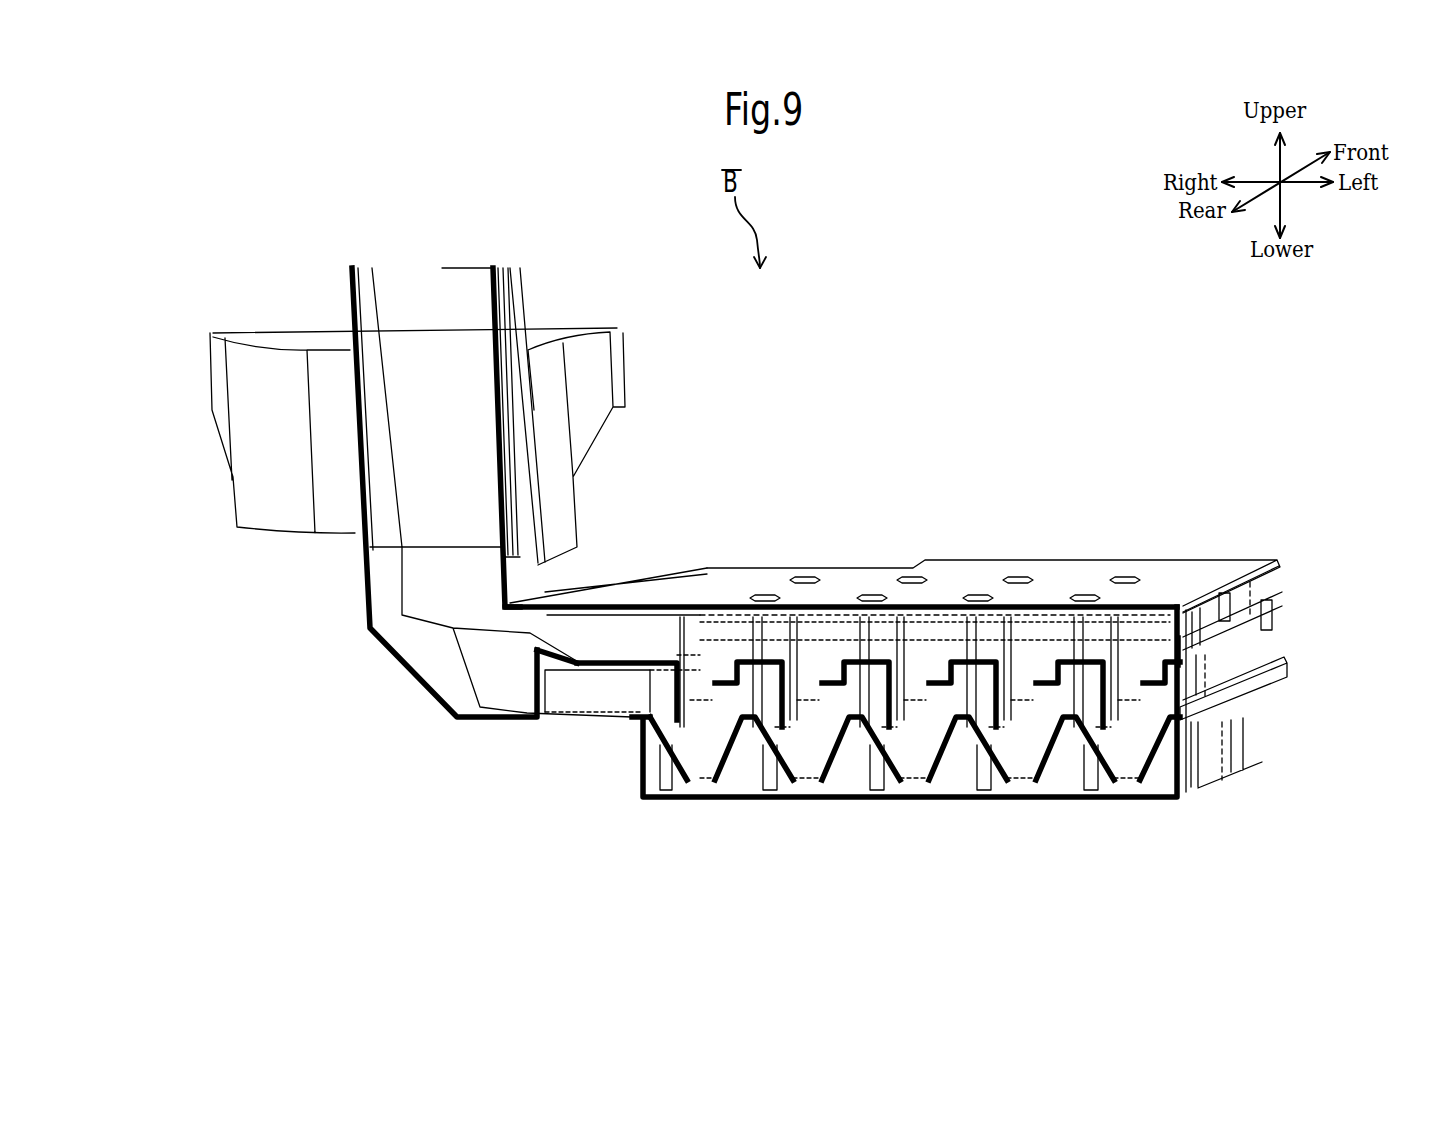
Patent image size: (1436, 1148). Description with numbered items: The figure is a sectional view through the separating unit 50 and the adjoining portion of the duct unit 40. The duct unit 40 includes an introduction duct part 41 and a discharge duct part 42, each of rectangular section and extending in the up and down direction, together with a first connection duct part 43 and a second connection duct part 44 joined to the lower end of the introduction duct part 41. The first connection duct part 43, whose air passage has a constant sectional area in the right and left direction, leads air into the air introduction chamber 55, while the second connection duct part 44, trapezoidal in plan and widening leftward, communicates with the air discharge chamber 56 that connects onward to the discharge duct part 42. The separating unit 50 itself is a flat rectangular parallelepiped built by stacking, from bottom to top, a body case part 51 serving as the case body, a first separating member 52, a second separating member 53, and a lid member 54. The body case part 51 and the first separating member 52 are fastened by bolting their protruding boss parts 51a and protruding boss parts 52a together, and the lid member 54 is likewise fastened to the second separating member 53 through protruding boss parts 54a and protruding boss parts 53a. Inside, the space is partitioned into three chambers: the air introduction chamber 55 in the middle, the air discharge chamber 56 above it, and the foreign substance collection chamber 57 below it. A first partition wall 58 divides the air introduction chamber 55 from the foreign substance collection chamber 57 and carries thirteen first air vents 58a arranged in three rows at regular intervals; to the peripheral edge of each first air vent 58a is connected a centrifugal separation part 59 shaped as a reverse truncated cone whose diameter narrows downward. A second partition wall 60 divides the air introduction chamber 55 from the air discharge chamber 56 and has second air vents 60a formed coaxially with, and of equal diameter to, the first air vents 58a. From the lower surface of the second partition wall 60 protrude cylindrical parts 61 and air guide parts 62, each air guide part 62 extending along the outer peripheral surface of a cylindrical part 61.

The duct unit 40 is at (567, 317).
The introduction duct part 41 is at (593, 390).
The discharge duct part 42 is at (507, 486).
The first connection duct part 43 is at (597, 720).
The second connection duct part 44 is at (600, 597).
The separating unit 50 is at (862, 562).
The body case part 51 is at (1203, 757).
The protruding boss parts 51a is at (903, 745).
The first separating member 52 is at (1217, 667).
The protruding boss parts 52a is at (868, 743).
The second separating member 53 is at (1258, 600).
The protruding boss parts 53a is at (1090, 650).
The lid member 54 is at (1190, 577).
The protruding boss parts 54a is at (1072, 597).
The air introduction chamber 55 is at (840, 668).
The air discharge chamber 56 is at (847, 625).
The foreign substance collection chamber 57 is at (790, 672).
The first partition wall 58 is at (1163, 655).
The first air vents 58a is at (1138, 690).
The centrifugal separation part 59 is at (675, 752).
The second partition wall 60 is at (690, 648).
The second air vents 60a is at (692, 658).
The cylindrical parts 61 is at (670, 692).
The air guide parts 62 is at (1050, 668).